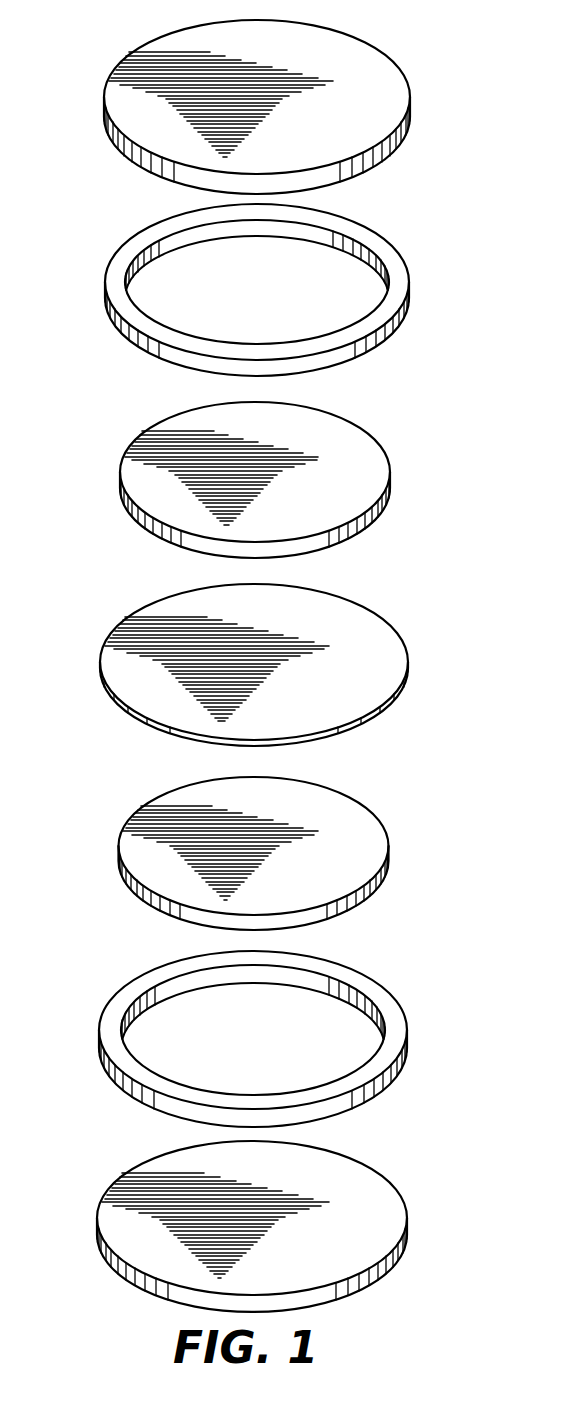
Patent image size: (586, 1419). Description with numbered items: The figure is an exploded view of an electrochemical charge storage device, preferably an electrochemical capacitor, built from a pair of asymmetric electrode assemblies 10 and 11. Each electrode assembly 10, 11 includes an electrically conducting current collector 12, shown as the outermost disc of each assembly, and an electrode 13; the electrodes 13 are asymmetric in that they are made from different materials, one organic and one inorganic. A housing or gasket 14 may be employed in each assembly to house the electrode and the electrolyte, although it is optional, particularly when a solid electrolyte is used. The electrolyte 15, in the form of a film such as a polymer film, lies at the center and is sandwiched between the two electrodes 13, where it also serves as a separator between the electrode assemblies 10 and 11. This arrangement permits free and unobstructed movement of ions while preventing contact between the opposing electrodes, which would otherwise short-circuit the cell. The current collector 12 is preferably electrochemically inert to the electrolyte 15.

The electrode assembly 10 is at (459, 35).
The electrode assembly 11 is at (454, 792).
The current collector 12 is at (112, 140).
The electrode 13 is at (123, 495).
The housing or gasket 14 is at (108, 318).
The electrolyte 15 is at (105, 683).